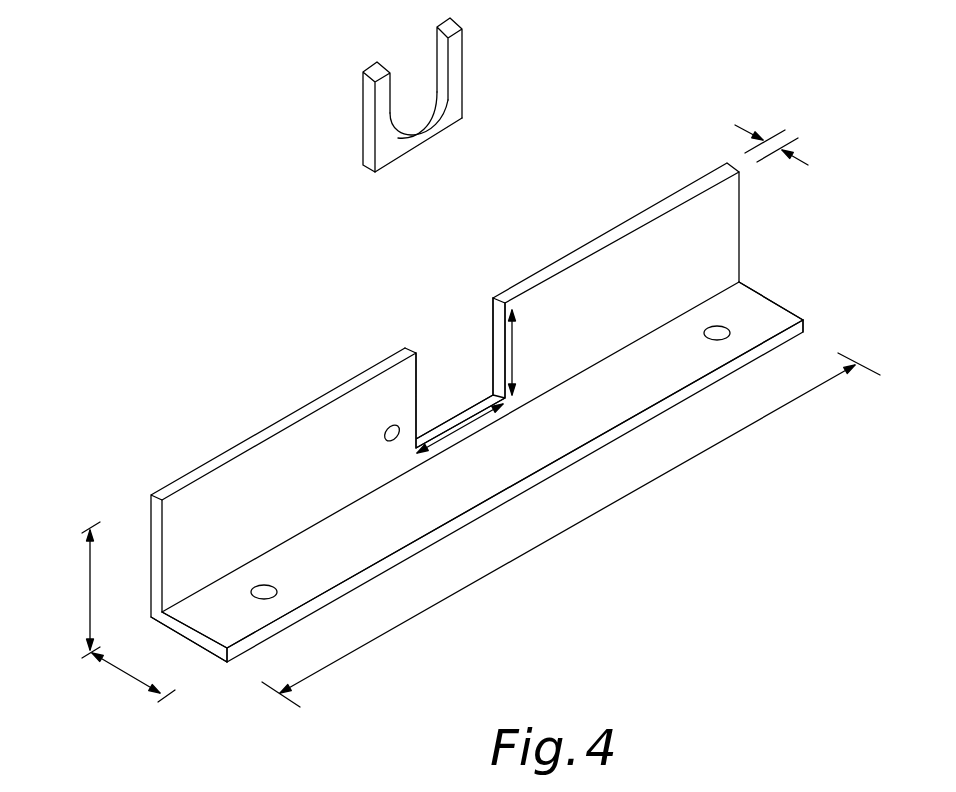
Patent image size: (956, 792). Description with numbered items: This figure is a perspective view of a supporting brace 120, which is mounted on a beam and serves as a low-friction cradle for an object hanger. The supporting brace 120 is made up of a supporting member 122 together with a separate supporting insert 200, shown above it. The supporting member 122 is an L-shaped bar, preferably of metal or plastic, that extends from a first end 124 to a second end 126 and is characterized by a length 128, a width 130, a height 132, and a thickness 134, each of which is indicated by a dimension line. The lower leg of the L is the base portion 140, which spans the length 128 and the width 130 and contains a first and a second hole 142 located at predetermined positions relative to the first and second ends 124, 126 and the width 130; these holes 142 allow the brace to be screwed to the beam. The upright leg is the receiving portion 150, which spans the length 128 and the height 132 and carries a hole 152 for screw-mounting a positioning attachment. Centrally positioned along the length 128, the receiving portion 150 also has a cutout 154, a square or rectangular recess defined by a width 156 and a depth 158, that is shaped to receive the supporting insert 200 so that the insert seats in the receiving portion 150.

The supporting brace 120 is at (757, 540).
The supporting member 122 is at (540, 435).
The first end 124 is at (215, 652).
The second end 126 is at (772, 300).
The length 128 is at (570, 528).
The width 130 is at (125, 675).
The height 132 is at (90, 590).
The thickness 134 is at (785, 133).
The base portion 140 is at (342, 548).
The first and second holes 142 is at (246, 590).
The receiving portion 150 is at (275, 458).
The hole 152 is at (378, 438).
The cutout 154 is at (490, 292).
The width 156 is at (462, 433).
The depth 158 is at (513, 352).
The supporting insert 200 is at (452, 115).